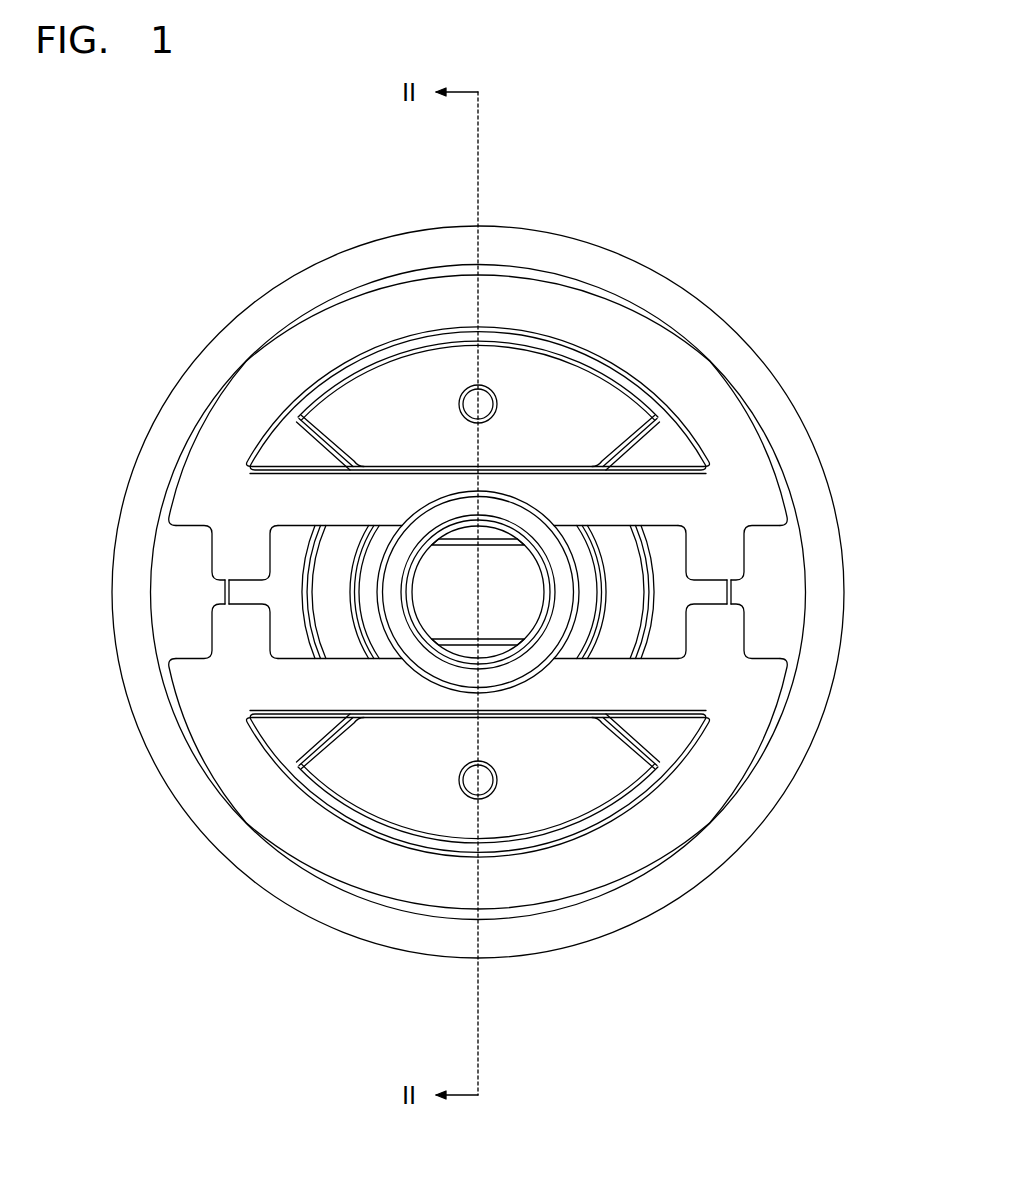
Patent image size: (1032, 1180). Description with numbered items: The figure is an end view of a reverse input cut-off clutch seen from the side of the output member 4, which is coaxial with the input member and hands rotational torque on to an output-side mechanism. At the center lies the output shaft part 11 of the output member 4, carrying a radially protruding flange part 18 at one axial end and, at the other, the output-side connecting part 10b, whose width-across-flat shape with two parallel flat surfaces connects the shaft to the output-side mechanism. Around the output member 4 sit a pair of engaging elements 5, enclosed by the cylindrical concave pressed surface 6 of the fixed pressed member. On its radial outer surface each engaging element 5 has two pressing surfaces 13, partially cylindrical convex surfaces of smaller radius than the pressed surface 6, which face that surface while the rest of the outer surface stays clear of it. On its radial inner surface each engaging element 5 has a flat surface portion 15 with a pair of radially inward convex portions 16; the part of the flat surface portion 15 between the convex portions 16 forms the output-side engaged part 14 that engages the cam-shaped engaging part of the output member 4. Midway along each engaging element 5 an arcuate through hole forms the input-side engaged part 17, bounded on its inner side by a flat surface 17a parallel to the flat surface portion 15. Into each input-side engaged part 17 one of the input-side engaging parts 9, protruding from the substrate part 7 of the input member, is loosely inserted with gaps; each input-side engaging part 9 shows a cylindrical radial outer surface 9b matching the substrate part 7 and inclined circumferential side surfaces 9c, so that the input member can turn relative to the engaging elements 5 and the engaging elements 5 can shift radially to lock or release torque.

The output member 4 is at (520, 613).
The engaging elements 5 is at (447, 293).
The pressed surface 6 is at (328, 320).
The substrate part 7 is at (712, 722).
The input-side engaging parts 9 is at (512, 373).
The radial outer surface 9b is at (417, 345).
The circumferential side surfaces 9c is at (313, 447).
The output-side connecting part 10b is at (229, 596).
The output shaft part 11 is at (517, 573).
The pressing surfaces 13 is at (237, 375).
The output-side engaged part 14 is at (268, 527).
The flat surface portion 15 is at (663, 530).
The convex portions 16 is at (230, 550).
The input-side engaged part 17 is at (563, 350).
The flat surface 17a is at (571, 462).
The flange part 18 is at (437, 670).